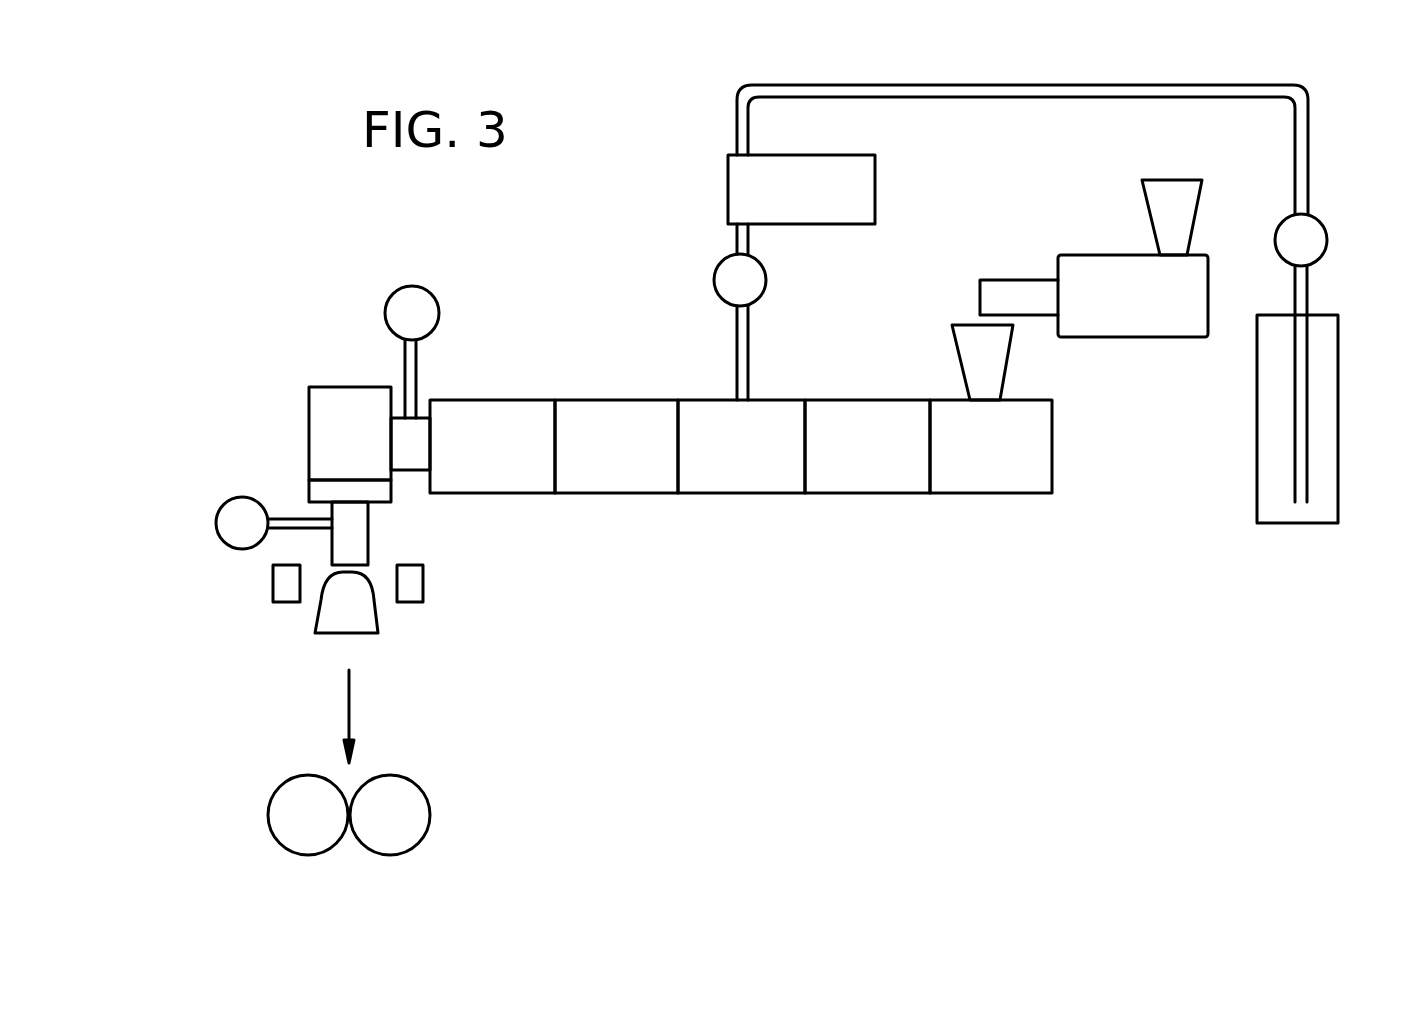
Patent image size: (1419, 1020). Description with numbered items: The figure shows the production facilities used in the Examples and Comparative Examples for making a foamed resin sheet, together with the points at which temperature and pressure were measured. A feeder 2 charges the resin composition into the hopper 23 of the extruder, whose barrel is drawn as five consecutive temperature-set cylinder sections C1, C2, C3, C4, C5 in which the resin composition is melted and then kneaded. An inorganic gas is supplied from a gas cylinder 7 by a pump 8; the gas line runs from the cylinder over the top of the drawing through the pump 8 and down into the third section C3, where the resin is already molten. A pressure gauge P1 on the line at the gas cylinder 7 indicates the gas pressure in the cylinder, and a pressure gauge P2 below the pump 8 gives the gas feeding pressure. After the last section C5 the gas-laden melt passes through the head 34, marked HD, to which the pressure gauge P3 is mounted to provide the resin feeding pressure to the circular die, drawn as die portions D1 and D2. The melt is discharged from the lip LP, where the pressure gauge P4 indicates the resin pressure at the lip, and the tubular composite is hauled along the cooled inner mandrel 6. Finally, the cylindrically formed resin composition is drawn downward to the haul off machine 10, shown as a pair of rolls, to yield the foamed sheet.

The feeder 2 is at (1147, 330).
The hopper 23 is at (998, 365).
The gas cylinder 7 is at (1322, 440).
The pump 8 is at (834, 212).
The head 34 is at (410, 440).
The inner mandrel 6 is at (370, 610).
The haul off machine 10 is at (440, 811).
The lip LP is at (362, 530).
The die D1 is at (350, 433).
The die D2 is at (308, 487).
The gas cylinder pressure gauge P1 is at (1328, 240).
The gas feeding pressure gauge P2 is at (713, 290).
The resin feeding pressure gauge P3 is at (432, 307).
The lip pressure gauge P4 is at (215, 522).
The extruder cylinder section C1 is at (991, 446).
The extruder cylinder section C2 is at (867, 446).
The extruder cylinder section C3 is at (741, 446).
The extruder cylinder section C4 is at (616, 446).
The extruder cylinder section C5 is at (492, 446).